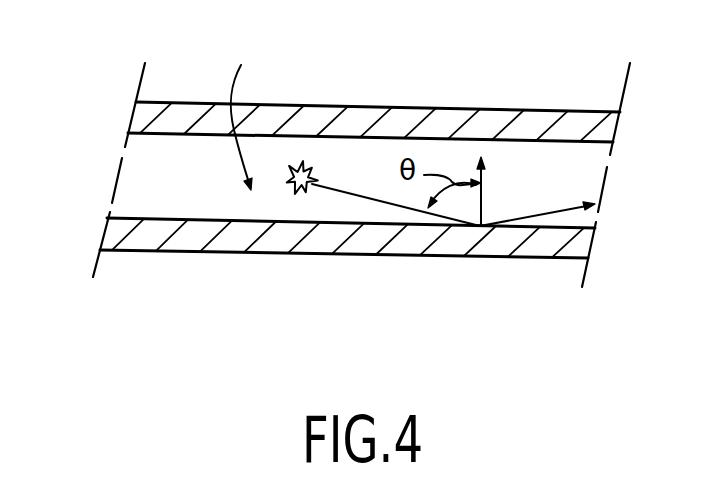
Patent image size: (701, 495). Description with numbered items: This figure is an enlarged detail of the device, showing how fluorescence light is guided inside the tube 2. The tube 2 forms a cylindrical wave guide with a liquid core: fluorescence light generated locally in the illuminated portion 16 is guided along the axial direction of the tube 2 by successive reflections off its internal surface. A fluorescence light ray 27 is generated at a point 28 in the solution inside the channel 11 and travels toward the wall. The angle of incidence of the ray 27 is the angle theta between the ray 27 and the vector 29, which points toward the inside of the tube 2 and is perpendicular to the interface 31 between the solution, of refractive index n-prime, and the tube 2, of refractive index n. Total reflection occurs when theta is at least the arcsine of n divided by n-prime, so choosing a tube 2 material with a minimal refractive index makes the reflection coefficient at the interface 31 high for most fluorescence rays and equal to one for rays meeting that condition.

The tube 2 is at (385, 103).
The channel 11 is at (187, 170).
The illuminated portion 16 is at (245, 111).
The fluorescence light ray 27 is at (347, 192).
The point 28 is at (300, 164).
The vector 29 is at (485, 203).
The interface 31 is at (155, 218).